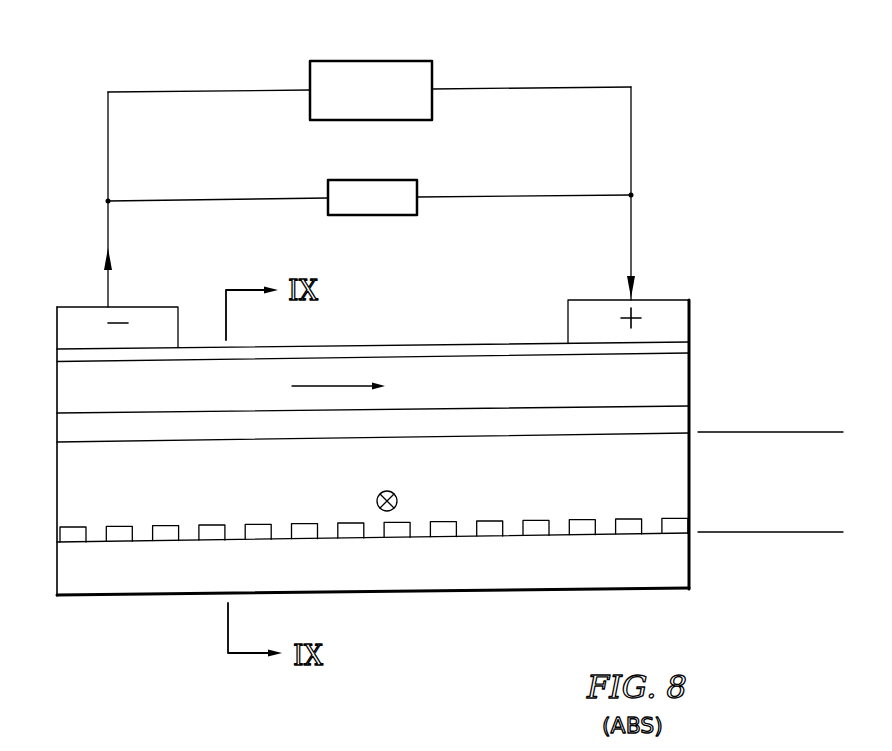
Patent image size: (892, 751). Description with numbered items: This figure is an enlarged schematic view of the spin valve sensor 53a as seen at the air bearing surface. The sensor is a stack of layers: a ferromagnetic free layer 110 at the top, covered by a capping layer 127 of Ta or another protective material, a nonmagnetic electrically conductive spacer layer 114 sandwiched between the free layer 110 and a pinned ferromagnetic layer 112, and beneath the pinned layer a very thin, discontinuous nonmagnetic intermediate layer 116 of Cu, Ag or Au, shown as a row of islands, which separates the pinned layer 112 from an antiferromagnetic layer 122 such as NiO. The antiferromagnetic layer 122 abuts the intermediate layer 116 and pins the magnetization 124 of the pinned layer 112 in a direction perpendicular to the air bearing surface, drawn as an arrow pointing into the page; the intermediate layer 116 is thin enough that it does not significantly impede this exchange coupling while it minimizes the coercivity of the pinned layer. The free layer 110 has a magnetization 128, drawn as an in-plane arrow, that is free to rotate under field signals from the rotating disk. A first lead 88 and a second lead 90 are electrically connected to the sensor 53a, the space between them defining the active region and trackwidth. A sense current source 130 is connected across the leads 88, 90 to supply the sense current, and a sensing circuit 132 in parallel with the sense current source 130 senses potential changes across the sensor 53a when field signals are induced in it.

The spin valve sensor 53a is at (700, 152).
The sensing circuit 132 is at (307, 101).
The sense current source 130 is at (388, 215).
The first lead 88 is at (108, 223).
The second lead 90 is at (630, 218).
The capping layer 127 is at (689, 342).
The ferromagnetic free layer 110 is at (689, 376).
The magnetization of the free layer 128 is at (340, 386).
The nonmagnetic electrically conductive spacer layer 114 is at (689, 416).
The pinned ferromagnetic layer 112 is at (803, 434).
The magnetization of the pinned layer 124 is at (377, 505).
The discontinuous nonmagnetic intermediate layer 116 is at (689, 509).
The antiferromagnetic layer 122 is at (689, 567).